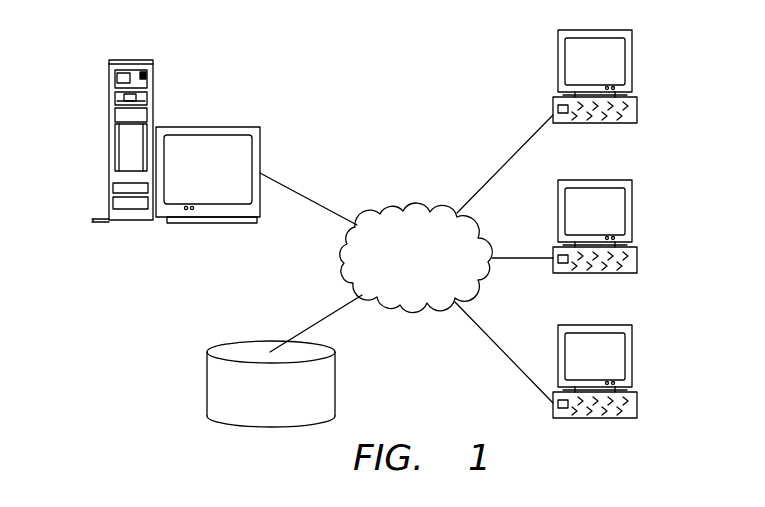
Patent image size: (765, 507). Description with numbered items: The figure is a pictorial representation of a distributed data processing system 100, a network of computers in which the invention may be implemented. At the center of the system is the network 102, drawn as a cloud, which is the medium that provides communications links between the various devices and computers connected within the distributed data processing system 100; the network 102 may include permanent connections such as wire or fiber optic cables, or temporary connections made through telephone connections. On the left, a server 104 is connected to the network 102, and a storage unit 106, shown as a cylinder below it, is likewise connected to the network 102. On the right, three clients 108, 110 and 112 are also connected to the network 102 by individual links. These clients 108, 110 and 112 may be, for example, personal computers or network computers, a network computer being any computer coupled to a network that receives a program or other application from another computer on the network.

The distributed data processing system 100 is at (341, 91).
The network 102 is at (388, 208).
The server 104 is at (109, 143).
The storage unit 106 is at (207, 383).
The client 108 is at (632, 62).
The client 110 is at (632, 212).
The client 112 is at (632, 358).